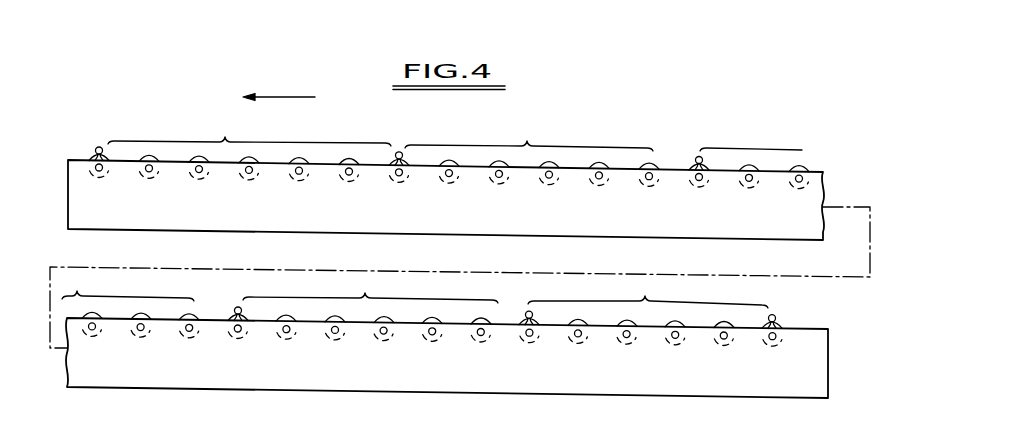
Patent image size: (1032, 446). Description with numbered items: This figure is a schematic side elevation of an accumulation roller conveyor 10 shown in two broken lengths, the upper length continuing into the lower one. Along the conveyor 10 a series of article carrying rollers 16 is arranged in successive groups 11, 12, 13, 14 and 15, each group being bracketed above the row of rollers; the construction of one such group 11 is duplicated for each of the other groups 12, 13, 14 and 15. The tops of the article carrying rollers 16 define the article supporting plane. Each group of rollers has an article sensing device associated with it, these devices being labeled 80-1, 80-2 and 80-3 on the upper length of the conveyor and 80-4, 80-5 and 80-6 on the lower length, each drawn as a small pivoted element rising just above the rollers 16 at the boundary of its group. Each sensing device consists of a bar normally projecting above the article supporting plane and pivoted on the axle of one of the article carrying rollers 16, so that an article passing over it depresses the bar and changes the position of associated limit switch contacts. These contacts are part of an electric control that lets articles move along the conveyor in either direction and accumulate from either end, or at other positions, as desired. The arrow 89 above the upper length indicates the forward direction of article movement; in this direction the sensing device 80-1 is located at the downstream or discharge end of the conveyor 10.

The accumulation roller conveyor 10 is at (253, 210).
The first group of article carrying rollers 11 is at (249, 128).
The second group of article carrying rollers 12 is at (529, 130).
The third group of article carrying rollers 13 is at (437, 211).
The fourth group of article carrying rollers 14 is at (370, 287).
The fifth group of article carrying rollers 15 is at (648, 291).
The article carrying rollers 16 is at (296, 164).
The article sensing device 80-1 is at (99, 147).
The article sensing device 80-2 is at (396, 152).
The article sensing device 80-3 is at (696, 156).
The article sensing device 80-4 is at (235, 307).
The article sensing device 80-5 is at (526, 311).
The article sensing device 80-6 is at (775, 315).
The arrow 89 is at (313, 85).